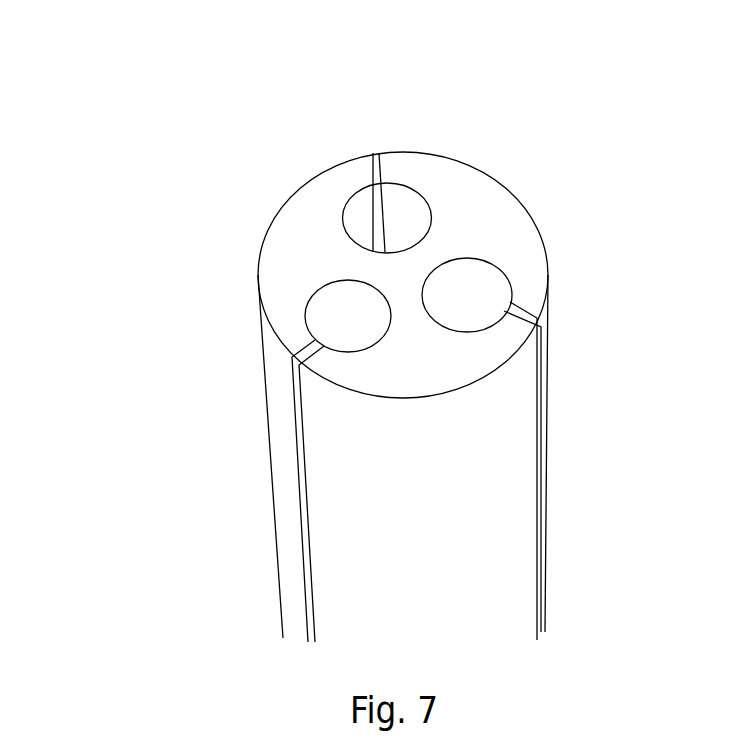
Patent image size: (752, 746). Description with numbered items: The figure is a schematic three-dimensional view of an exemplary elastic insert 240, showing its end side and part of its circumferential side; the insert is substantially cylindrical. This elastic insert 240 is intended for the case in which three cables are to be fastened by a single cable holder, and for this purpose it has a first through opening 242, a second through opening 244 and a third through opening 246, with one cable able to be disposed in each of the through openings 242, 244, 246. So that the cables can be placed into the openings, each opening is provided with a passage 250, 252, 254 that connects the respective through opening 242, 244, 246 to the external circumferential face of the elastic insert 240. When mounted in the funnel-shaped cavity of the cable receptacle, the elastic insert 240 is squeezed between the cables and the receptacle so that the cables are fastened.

The elastic insert 240 is at (162, 150).
The first through opening 242 is at (349, 185).
The second through opening 244 is at (489, 336).
The third through opening 246 is at (296, 312).
The passage 250 is at (369, 146).
The passage 252 is at (548, 322).
The passage 254 is at (287, 359).